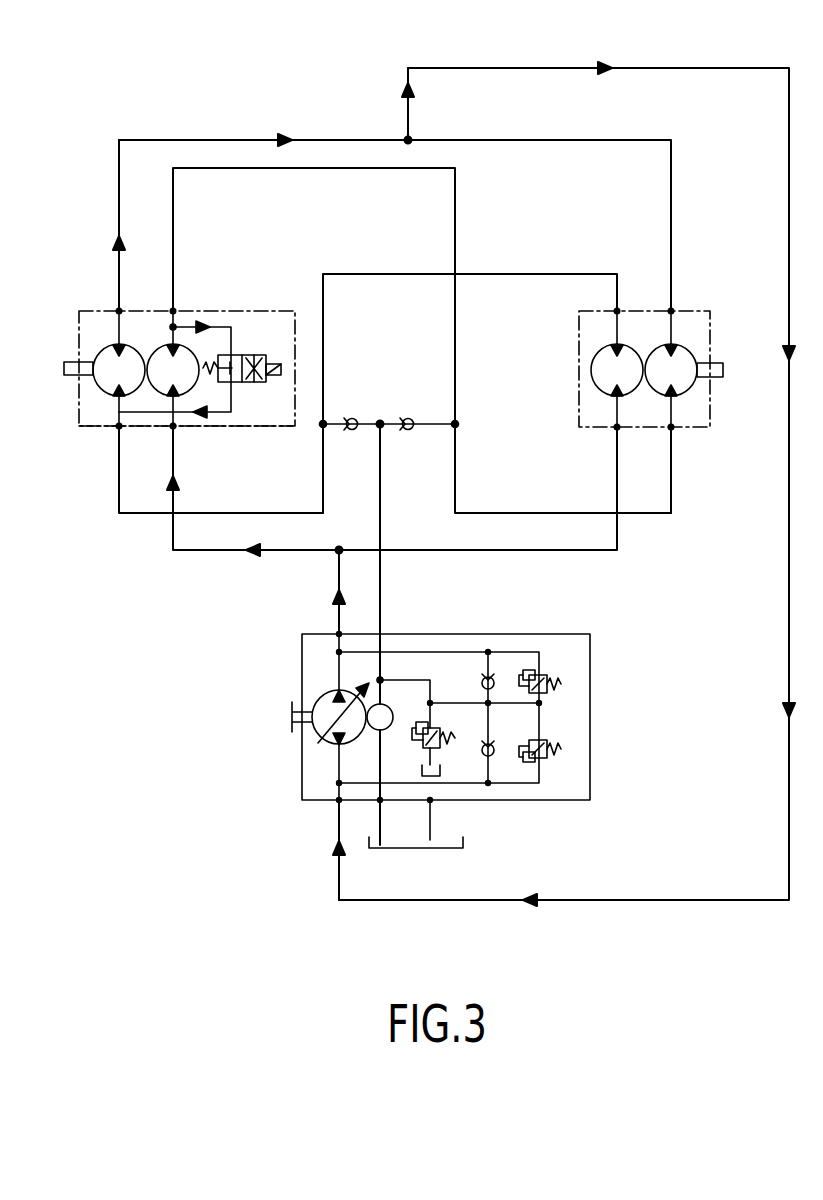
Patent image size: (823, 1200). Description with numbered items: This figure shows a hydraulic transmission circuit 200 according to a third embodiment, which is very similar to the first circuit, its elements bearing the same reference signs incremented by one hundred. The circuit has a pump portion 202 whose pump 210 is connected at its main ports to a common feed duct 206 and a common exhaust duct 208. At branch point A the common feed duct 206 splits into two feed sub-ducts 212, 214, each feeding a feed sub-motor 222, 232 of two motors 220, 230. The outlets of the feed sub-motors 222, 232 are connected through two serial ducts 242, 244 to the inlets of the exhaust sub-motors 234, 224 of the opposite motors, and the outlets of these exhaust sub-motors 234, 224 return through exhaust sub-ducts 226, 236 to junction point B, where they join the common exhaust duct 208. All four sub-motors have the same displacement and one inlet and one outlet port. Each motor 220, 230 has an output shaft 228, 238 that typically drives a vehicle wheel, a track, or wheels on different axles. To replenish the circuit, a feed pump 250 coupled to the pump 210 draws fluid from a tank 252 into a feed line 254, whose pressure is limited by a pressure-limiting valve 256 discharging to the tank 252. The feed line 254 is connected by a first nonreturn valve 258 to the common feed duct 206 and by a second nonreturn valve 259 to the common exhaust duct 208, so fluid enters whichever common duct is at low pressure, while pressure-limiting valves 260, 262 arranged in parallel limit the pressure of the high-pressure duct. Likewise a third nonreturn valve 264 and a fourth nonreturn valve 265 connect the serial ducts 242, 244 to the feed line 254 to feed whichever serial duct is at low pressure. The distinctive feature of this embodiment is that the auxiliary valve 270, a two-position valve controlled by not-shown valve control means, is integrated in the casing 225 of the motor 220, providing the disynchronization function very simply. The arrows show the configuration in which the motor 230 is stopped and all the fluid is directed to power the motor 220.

The hydraulic transmission circuit 200 is at (242, 96).
The pump portion 202 is at (378, 910).
The common feed duct 206 is at (339, 567).
The common exhaust duct 208 is at (339, 875).
The pump 210 is at (318, 731).
The feed sub-duct 212 is at (173, 536).
The feed sub-duct 214 is at (580, 551).
The motor 220 is at (77, 304).
The feed sub-motor 222 is at (185, 350).
The exhaust sub-motor 224 is at (97, 388).
The casing 225 is at (97, 428).
The exhaust sub-duct 226 is at (119, 175).
The output shaft 228 is at (64, 368).
The motor 230 is at (712, 308).
The feed sub-motor 232 is at (597, 355).
The exhaust sub-motor 234 is at (690, 388).
The exhaust sub-duct 236 is at (671, 175).
The output shaft 238 is at (723, 370).
The serial duct 242 is at (355, 169).
The serial duct 244 is at (392, 274).
The feed pump 250 is at (383, 704).
The tank 252 is at (418, 848).
The feed line 254 is at (380, 577).
The pressure-limiting valve 256 is at (447, 758).
The first nonreturn valve 258 is at (493, 676).
The second nonreturn valve 259 is at (491, 757).
The pressure-limiting valve 260 is at (548, 681).
The pressure-limiting valve 262 is at (548, 751).
The third nonreturn valve 264 is at (411, 430).
The fourth nonreturn valve 265 is at (351, 430).
The auxiliary valve 270 is at (250, 352).